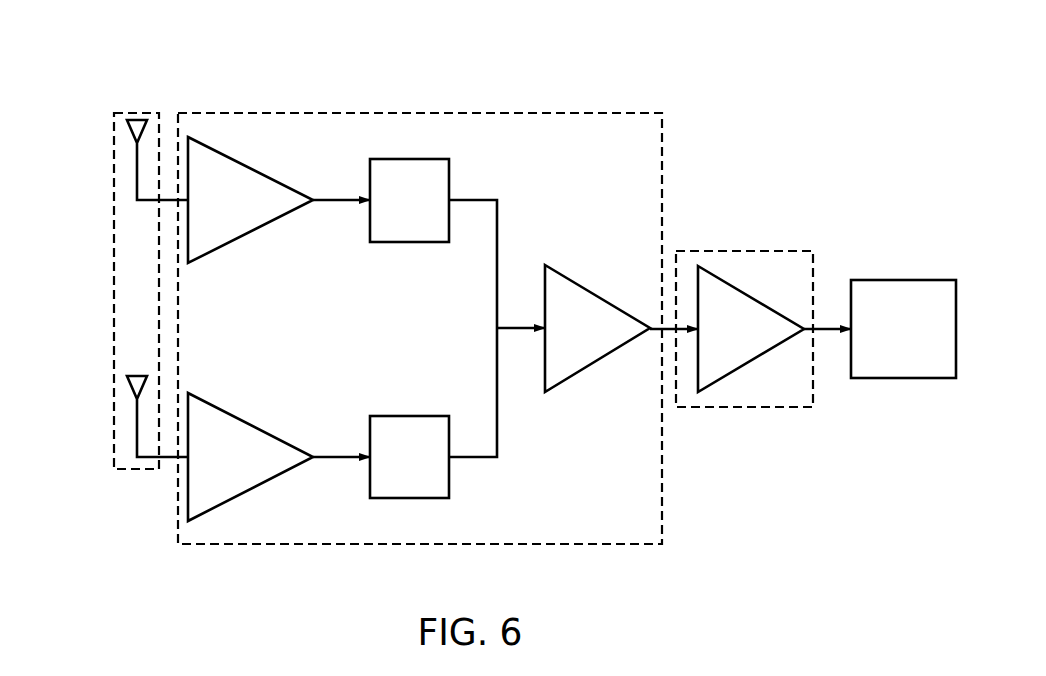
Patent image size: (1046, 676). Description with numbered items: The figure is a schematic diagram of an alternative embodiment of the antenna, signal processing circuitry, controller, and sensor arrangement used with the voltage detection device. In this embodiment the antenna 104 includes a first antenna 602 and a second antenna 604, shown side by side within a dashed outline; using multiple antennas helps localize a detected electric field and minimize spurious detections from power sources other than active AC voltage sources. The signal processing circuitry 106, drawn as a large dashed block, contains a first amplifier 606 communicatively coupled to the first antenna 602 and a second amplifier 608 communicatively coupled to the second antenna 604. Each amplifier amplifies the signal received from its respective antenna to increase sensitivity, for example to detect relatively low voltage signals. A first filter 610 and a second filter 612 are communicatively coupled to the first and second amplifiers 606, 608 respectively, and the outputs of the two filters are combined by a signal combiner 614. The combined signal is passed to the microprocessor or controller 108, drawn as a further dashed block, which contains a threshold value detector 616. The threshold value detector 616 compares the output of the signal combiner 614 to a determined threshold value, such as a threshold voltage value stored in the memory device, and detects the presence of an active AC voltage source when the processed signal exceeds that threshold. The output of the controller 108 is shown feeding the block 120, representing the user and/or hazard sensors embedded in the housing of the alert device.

The antenna 104 is at (134, 113).
The signal processing circuitry 106 is at (413, 113).
The microprocessor or controller 108 is at (749, 251).
The user and/or hazard sensors 120 is at (903, 280).
The first antenna 602 is at (127, 134).
The second antenna 604 is at (127, 393).
The first amplifier 606 is at (253, 230).
The second amplifier 608 is at (248, 424).
The first filter 610 is at (413, 242).
The second filter 612 is at (410, 416).
The signal combiner 614 is at (600, 359).
The threshold value detector 616 is at (753, 359).